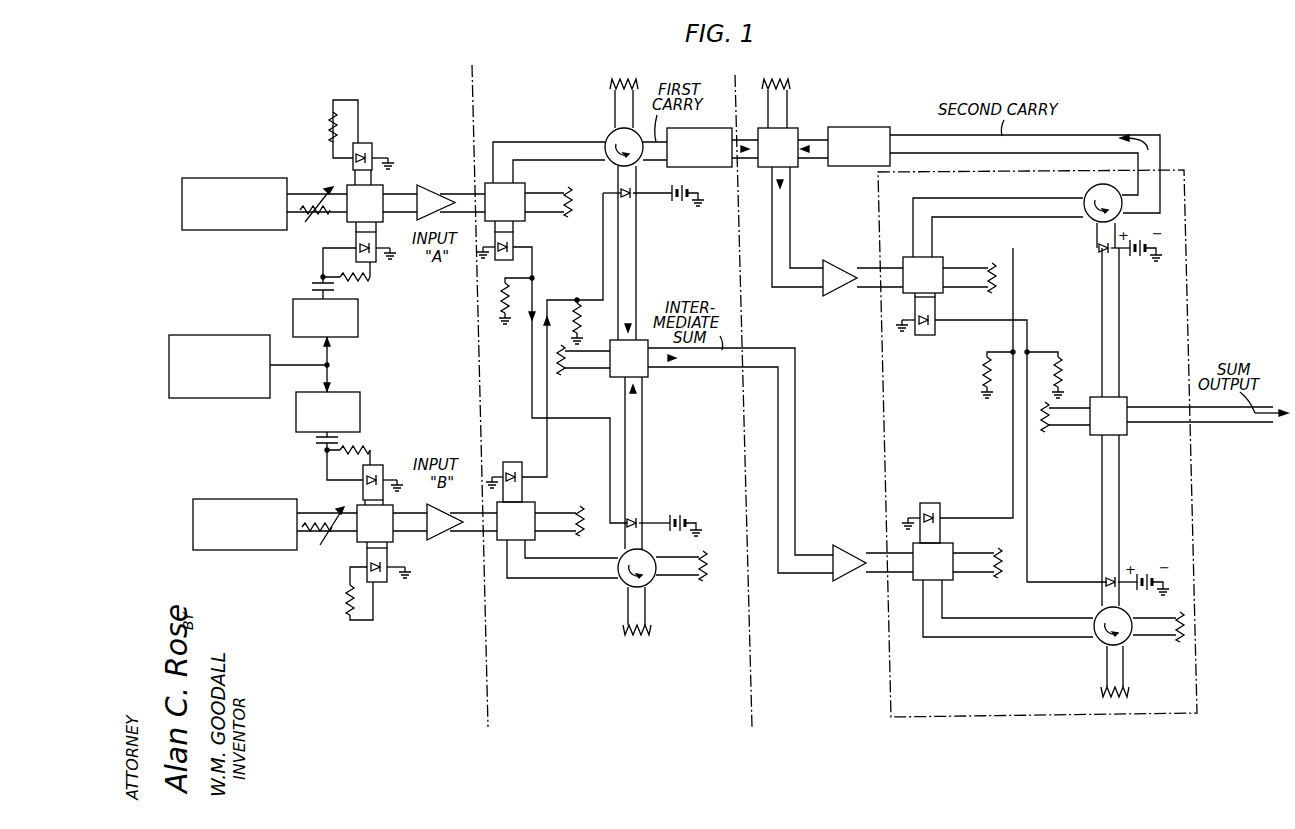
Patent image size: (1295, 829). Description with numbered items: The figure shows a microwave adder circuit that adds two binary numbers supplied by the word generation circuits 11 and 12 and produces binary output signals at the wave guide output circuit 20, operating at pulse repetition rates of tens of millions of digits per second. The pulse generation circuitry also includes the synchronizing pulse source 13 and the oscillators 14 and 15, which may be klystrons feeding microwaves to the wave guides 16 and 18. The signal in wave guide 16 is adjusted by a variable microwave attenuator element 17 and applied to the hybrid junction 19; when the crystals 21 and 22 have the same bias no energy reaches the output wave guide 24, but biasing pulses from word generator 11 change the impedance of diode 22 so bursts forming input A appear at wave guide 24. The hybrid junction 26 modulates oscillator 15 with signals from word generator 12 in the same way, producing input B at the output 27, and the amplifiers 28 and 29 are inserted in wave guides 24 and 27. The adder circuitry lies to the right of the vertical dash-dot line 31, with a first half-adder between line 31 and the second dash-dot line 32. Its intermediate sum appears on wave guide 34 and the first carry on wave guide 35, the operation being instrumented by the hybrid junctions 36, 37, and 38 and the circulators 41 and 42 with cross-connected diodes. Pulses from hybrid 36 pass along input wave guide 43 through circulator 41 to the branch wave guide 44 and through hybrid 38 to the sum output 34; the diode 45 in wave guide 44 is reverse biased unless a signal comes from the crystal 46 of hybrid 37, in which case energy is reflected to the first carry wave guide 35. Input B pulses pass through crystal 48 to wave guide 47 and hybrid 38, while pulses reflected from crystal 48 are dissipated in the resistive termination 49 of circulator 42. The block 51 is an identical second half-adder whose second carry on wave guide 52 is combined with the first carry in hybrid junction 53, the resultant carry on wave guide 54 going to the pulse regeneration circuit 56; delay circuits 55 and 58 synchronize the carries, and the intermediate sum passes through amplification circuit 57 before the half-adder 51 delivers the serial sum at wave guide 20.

The word generation circuit 11 is at (293, 306).
The word generation circuit 12 is at (296, 420).
The synchronizing pulse source 13 is at (169, 362).
The oscillator 14 is at (182, 184).
The oscillator 15 is at (193, 525).
The wave guide 16 is at (338, 213).
The variable microwave attenuator element 17 is at (305, 200).
The wave guide 18 is at (323, 540).
The hybrid junction 19 is at (376, 213).
The wave guide output circuit 20 is at (1225, 418).
The crystal 21 is at (367, 143).
The crystal 22 is at (368, 254).
The output wave guide 24 is at (394, 196).
The hybrid junction 26 is at (390, 537).
The output 27 is at (406, 517).
The amplifier 28 is at (423, 188).
The amplifier 29 is at (437, 535).
The vertical dash-dot line 31 is at (487, 678).
The second dash-dot line 32 is at (745, 680).
The intermediate sum output wave guide 34 is at (698, 363).
The first carry wave guide 35 is at (654, 161).
The hybrid junction 36 is at (513, 193).
The hybrid junction 37 is at (526, 511).
The hybrid junction 38 is at (612, 371).
The circulator 41 is at (610, 134).
The circulator 42 is at (625, 573).
The input wave guide 43 is at (552, 145).
The wave guide 44 is at (615, 176).
The diode 45 is at (628, 202).
The crystal 46 is at (513, 462).
The wave guide 47 is at (638, 456).
The crystal 48 is at (639, 519).
The resistive termination 49 is at (710, 567).
The half-adder 51 is at (883, 378).
The carry output wave guide 52 is at (1097, 135).
The hybrid junction 53 is at (791, 135).
The wave guide 54 is at (791, 179).
The delay circuit 55 is at (706, 131).
The pulse regeneration circuit 56 is at (845, 290).
The amplification circuit 57 is at (838, 576).
The delay circuit 58 is at (854, 132).